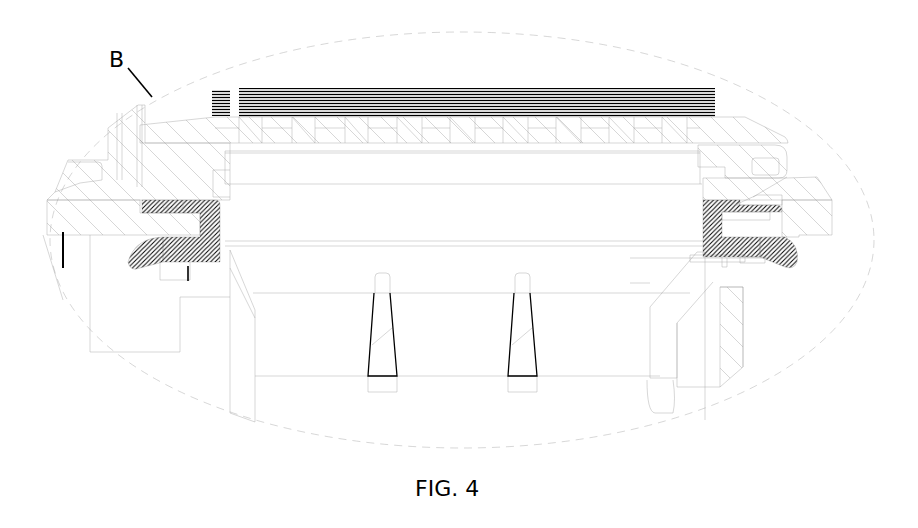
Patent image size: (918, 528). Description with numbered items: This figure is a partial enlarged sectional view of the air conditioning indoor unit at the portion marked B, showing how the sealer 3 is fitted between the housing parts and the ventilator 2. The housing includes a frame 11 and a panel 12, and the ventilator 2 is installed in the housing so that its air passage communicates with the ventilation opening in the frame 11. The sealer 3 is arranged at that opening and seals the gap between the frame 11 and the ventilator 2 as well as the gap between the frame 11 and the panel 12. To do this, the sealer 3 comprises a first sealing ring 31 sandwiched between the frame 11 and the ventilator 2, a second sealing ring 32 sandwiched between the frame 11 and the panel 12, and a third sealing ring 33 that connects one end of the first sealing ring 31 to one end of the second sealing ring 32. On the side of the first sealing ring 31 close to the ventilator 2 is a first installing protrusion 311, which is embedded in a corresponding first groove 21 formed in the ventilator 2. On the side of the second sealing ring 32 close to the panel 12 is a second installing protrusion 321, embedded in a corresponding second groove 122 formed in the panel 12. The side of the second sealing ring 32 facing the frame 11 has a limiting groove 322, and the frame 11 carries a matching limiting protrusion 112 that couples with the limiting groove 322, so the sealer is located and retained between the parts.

The ventilator 2 is at (187, 268).
The sealer 3 is at (175, 245).
The frame 11 is at (115, 228).
The panel 12 is at (130, 193).
The first groove 21 is at (730, 263).
The first sealing ring 31 is at (757, 245).
The second sealing ring 32 is at (730, 212).
The third sealing ring 33 is at (705, 225).
The limiting protrusion 112 is at (750, 213).
The second groove 122 is at (760, 193).
The first installing protrusion 311 is at (765, 263).
The second installing protrusion 321 is at (757, 195).
The limiting groove 322 is at (750, 212).